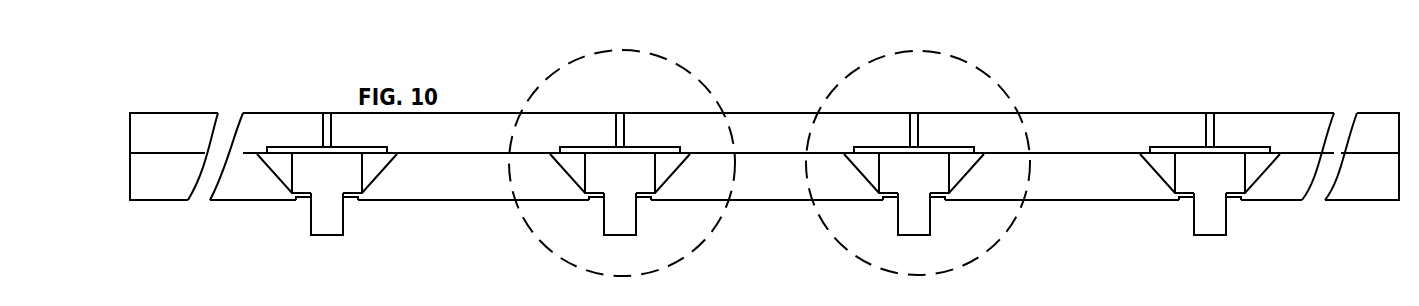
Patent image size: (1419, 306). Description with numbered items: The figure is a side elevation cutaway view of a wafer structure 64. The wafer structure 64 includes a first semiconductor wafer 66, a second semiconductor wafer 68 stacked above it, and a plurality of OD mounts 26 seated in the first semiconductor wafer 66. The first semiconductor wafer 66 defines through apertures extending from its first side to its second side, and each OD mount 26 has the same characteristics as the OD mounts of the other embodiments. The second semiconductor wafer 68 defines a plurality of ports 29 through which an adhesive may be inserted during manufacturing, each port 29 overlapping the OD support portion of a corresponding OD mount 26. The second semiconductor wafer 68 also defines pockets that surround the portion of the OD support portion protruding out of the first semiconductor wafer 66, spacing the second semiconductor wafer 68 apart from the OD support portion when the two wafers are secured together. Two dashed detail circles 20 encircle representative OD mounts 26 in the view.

The wafer structure 64 is at (266, 73).
The second semiconductor wafer 68 is at (1042, 113).
The first semiconductor wafer 66 is at (1057, 201).
The fastener assembly 20 is at (697, 80).
The port 29 is at (618, 117).
The OD mount 26 is at (618, 235).